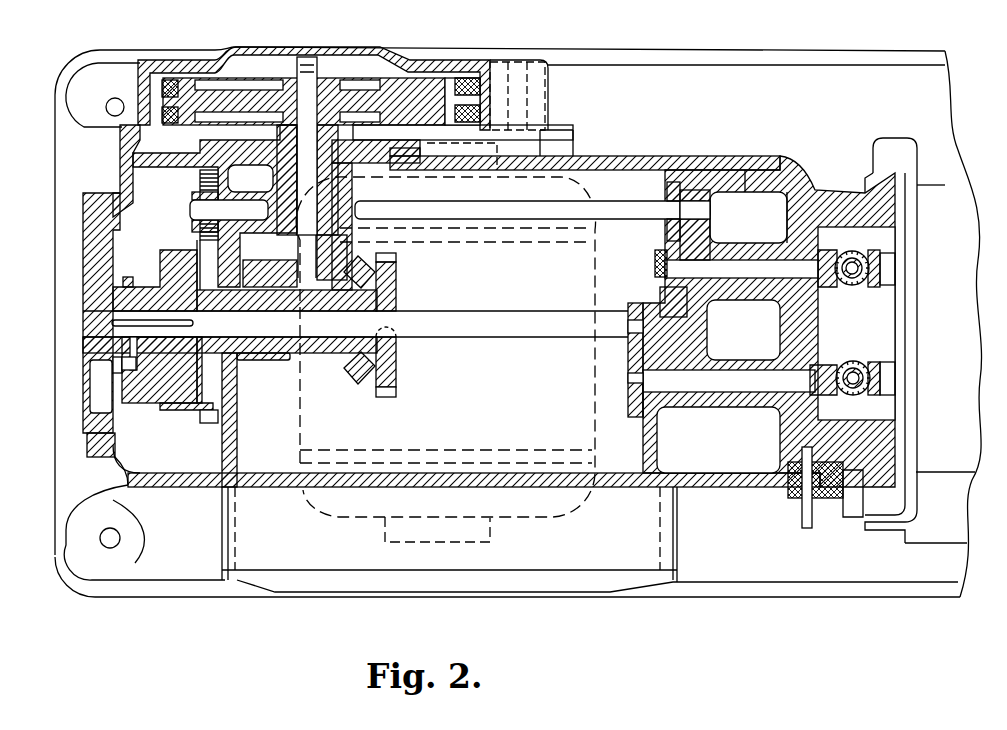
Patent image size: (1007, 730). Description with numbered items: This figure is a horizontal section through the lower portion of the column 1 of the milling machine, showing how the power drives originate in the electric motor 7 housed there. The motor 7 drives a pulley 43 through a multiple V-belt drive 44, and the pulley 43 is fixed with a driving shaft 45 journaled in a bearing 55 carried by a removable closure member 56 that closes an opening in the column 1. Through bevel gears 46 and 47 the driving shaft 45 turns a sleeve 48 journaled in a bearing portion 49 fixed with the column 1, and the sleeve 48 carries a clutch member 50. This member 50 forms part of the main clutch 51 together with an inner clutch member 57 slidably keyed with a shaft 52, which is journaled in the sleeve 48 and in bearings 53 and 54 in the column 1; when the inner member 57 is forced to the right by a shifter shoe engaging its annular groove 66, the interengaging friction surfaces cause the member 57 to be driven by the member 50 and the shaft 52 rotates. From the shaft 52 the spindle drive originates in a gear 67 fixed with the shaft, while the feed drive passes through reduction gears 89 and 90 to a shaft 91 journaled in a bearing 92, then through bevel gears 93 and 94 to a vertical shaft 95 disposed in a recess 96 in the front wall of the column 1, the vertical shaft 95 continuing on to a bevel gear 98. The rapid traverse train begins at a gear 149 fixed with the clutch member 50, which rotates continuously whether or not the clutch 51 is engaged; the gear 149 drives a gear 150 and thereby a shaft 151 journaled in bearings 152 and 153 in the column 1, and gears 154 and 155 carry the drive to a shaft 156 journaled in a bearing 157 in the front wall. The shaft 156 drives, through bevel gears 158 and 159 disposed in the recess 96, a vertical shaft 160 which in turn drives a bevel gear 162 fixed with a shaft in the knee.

The column 1 is at (283, 490).
The electric motor 7 is at (585, 422).
The pulley 43 is at (270, 95).
The multiple V-belt drive 44 is at (470, 88).
The driving shaft 45 is at (340, 182).
The bevel gear 46 is at (338, 253).
The bevel gear 47 is at (362, 378).
The sleeve 48 is at (330, 352).
The bearing portion 49 is at (273, 360).
The clutch member 50 is at (186, 406).
The main clutch 51 is at (130, 373).
The shaft 52 is at (476, 318).
The bearing 53 is at (62, 272).
The bearing 54 is at (650, 297).
The bearing 55 is at (367, 165).
The removable closure member 56 is at (392, 165).
The inner clutch member 57 is at (152, 385).
The annular groove 66 is at (140, 277).
The gear 67 is at (398, 363).
The reduction gear 89 is at (628, 306).
The reduction gear 90 is at (628, 370).
The shaft 91 is at (746, 373).
The bearing 92 is at (770, 360).
The bevel gear 93 is at (835, 362).
The bevel gear 94 is at (858, 362).
The vertical shaft 95 is at (845, 395).
The recess 96 is at (875, 332).
The bevel gear 98 is at (892, 385).
The gear 149 is at (210, 424).
The gear 150 is at (200, 187).
The shaft 151 is at (513, 207).
The bearing 152 is at (233, 197).
The bearing 153 is at (686, 196).
The gear 154 is at (667, 188).
The gear 155 is at (660, 252).
The shaft 156 is at (716, 262).
The bearing 157 is at (762, 247).
The bevel gear 158 is at (834, 255).
The bevel gear 159 is at (864, 250).
The vertical shaft 160 is at (857, 288).
The bevel gear 162 is at (888, 280).